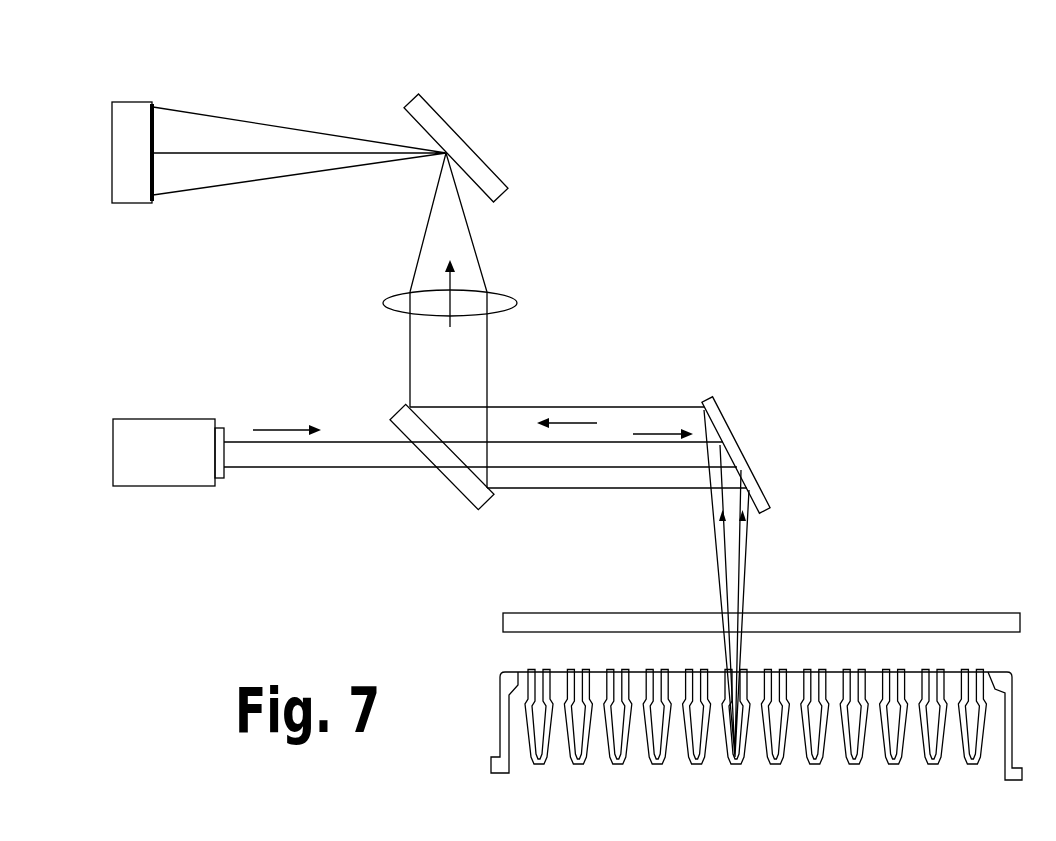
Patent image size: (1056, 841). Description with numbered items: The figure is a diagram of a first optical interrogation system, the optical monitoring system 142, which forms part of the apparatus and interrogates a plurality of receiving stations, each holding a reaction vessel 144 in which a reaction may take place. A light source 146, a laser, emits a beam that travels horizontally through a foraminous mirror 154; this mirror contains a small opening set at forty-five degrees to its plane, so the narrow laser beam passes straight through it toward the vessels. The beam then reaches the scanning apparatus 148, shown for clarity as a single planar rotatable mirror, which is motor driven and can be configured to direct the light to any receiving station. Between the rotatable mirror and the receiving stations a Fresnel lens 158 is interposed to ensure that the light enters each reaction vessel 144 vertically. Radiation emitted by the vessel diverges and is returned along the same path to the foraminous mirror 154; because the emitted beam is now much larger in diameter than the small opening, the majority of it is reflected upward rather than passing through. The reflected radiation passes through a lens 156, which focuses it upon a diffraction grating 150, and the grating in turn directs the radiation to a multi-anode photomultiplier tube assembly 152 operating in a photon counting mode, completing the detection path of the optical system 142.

The optical monitoring system 142 is at (697, 288).
The reaction vessel 144 is at (532, 710).
The light source 146 is at (158, 430).
The scanning apparatus 148 is at (750, 462).
The diffraction grating 150 is at (493, 165).
The multi-anode photomultiplier tube assembly 152 is at (132, 110).
The foraminous mirror 154 is at (455, 492).
The lens 156 is at (517, 305).
The Fresnel lens 158 is at (568, 613).